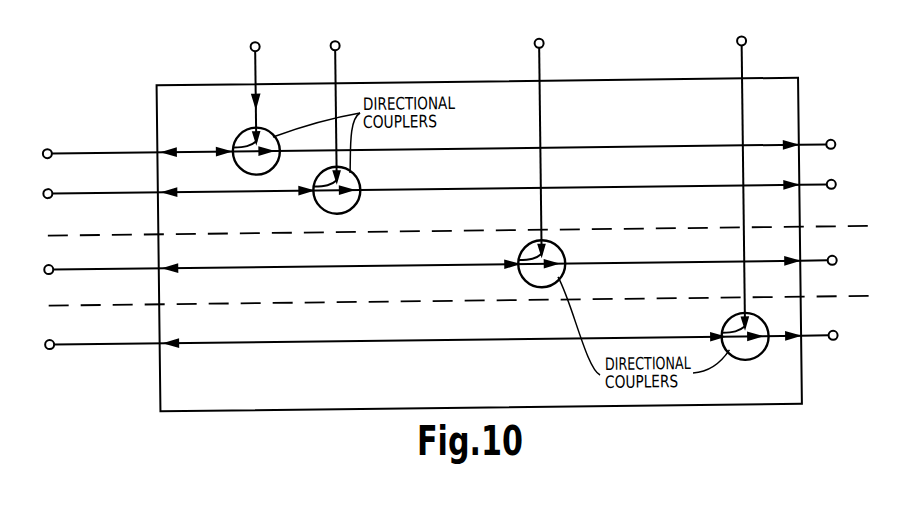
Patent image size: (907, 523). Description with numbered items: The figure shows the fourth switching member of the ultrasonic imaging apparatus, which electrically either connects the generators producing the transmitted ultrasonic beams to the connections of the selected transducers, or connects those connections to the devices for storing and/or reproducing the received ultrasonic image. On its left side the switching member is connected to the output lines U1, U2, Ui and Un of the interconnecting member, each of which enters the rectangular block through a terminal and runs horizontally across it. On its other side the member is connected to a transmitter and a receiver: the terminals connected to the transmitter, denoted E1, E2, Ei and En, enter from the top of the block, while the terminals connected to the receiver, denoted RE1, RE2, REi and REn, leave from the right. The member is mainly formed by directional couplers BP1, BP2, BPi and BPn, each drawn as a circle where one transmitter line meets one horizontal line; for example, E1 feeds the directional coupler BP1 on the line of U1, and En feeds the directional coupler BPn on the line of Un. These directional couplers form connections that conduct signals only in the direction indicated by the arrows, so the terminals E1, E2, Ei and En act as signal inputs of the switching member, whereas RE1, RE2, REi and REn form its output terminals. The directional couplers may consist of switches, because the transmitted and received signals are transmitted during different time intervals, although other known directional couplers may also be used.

The output line of the interconnecting member U1 is at (416, 137).
The output line of the interconnecting member U2 is at (416, 177).
The output line of the interconnecting member Ui is at (420, 254).
The output line of the interconnecting member Un is at (422, 326).
The transmitter terminal E1 is at (261, 78).
The transmitter terminal E2 is at (333, 98).
The transmitter terminal Ei is at (537, 134).
The transmitter terminal En is at (742, 170).
The receiver terminal RE1 is at (836, 144).
The receiver terminal RE2 is at (836, 184).
The receiver terminal REi is at (836, 259).
The receiver terminal REn is at (838, 334).
The directional coupler BP1 is at (244, 132).
The directional coupler BP2 is at (322, 175).
The directional coupler BPi is at (521, 256).
The directional coupler BPn is at (723, 329).